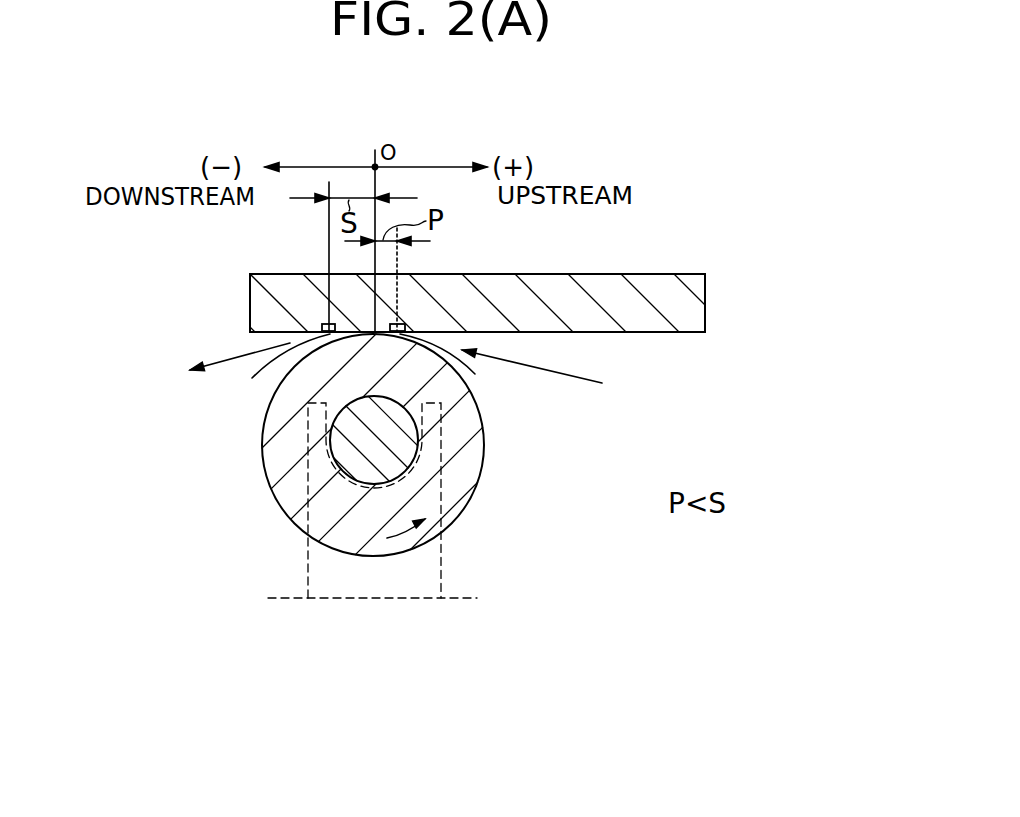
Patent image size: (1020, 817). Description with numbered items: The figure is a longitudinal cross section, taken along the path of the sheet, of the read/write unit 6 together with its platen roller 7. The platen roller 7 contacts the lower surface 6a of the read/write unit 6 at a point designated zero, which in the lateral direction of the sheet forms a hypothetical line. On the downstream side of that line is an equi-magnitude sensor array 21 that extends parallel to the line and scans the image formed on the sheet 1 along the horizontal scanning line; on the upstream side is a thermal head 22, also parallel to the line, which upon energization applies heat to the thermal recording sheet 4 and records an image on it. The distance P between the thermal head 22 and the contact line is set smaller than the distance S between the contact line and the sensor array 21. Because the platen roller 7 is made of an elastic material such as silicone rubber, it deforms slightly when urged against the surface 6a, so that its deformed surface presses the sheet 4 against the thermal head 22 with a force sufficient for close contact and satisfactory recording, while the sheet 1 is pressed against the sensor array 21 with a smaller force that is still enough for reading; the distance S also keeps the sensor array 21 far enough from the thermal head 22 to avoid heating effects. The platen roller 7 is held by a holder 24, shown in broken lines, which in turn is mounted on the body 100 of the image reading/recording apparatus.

The sheet 1 is at (545, 401).
The thermal recording sheet 4 is at (575, 378).
The read/write unit 6 is at (688, 273).
The lower surface of the read/write unit 6a is at (650, 332).
The platen roller 7 is at (468, 492).
The equi-magnitude sensor array 21 is at (260, 368).
The thermal head 22 is at (475, 374).
The holder 24 is at (441, 562).
The body of the image reading/recording apparatus 100 is at (470, 598).